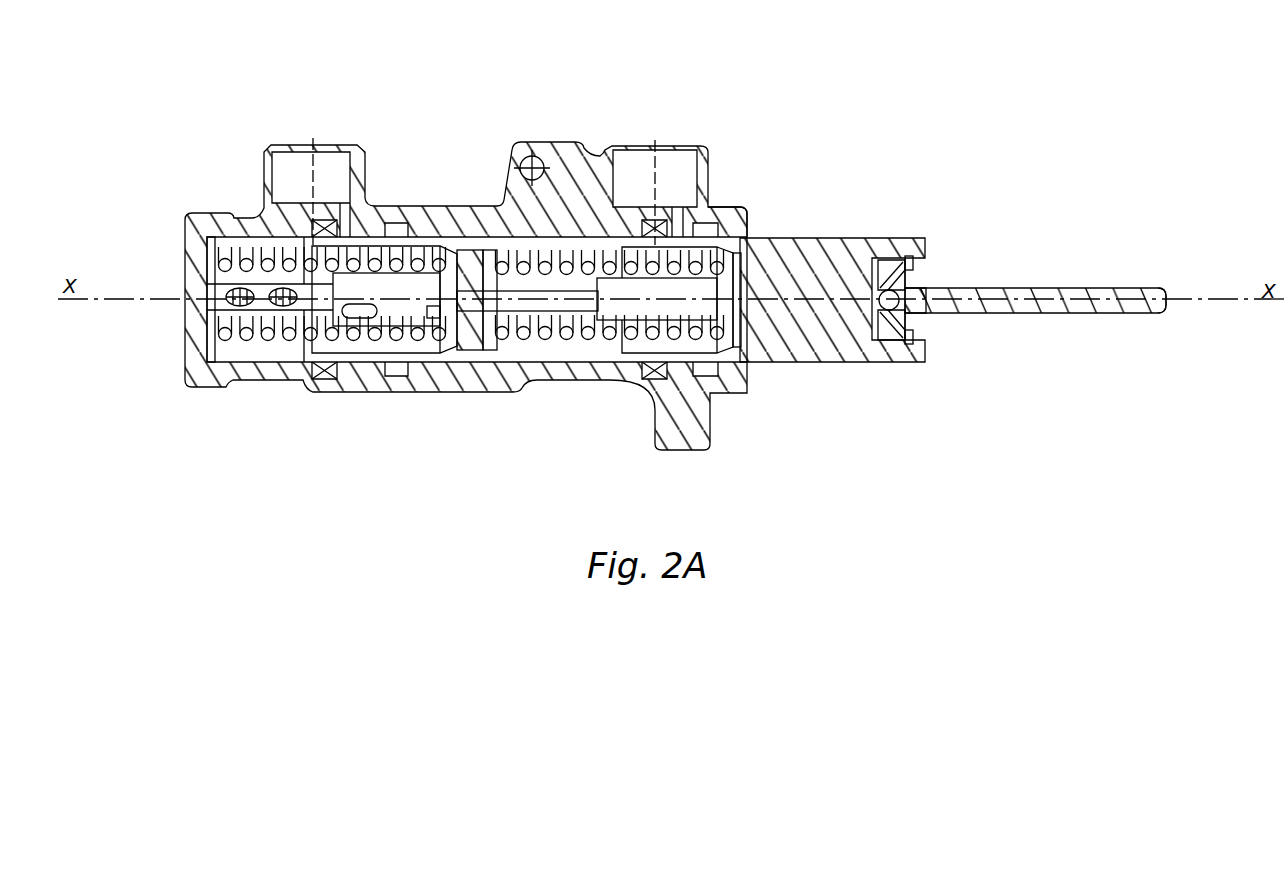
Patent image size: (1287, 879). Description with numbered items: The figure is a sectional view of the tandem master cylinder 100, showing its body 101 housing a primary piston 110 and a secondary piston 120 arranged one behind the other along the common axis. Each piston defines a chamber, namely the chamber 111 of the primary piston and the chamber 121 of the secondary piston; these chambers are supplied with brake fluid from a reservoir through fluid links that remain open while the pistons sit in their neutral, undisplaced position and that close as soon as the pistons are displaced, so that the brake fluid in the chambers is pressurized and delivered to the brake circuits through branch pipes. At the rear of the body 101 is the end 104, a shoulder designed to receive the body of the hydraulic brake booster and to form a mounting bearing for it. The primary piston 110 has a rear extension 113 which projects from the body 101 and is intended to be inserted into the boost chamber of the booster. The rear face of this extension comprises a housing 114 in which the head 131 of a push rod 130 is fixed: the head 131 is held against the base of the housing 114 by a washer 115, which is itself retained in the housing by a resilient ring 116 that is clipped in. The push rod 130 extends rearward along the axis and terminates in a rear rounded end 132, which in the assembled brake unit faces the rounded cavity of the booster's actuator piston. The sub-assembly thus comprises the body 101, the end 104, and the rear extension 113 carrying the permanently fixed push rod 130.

The tandem master cylinder 100 is at (492, 102).
The body 101 is at (572, 170).
The end 104 is at (723, 200).
The primary piston 110 is at (833, 231).
The chamber 111 is at (590, 348).
The rear extension 113 is at (806, 272).
The housing 114 is at (915, 336).
The washer 115 is at (896, 282).
The resilient ring 116 is at (914, 262).
The secondary piston 120 is at (470, 350).
The chamber 121 is at (263, 347).
The push rod 130 is at (1088, 313).
The head 131 is at (889, 324).
The rear rounded end 132 is at (1165, 300).